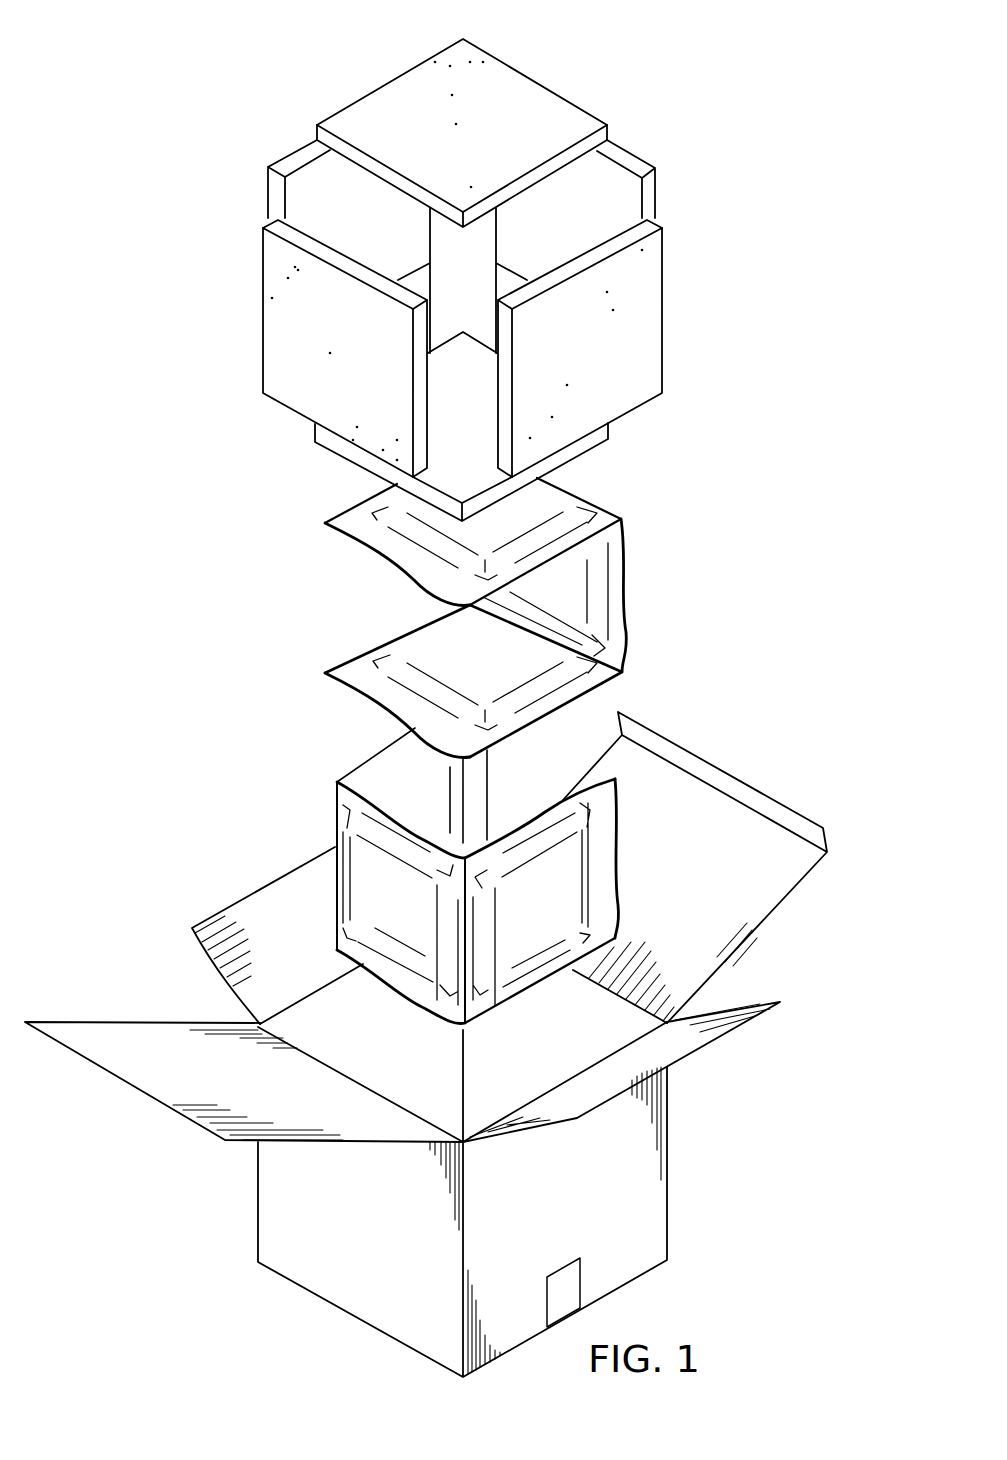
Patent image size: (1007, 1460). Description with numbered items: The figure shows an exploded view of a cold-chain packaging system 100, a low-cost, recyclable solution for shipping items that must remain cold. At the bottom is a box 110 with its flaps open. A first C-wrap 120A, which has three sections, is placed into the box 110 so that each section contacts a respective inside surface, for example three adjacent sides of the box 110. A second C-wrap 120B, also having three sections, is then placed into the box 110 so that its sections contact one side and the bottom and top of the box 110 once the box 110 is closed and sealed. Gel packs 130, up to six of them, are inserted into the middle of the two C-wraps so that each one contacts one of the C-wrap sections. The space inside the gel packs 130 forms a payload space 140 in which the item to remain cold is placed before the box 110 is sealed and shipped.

The cold-chain packaging system 100 is at (200, 70).
The box 110 is at (669, 1221).
The first C-wrap 120A is at (337, 815).
The second C-wrap 120B is at (626, 572).
The gel packs 130 is at (540, 83).
The payload space 140 is at (437, 288).